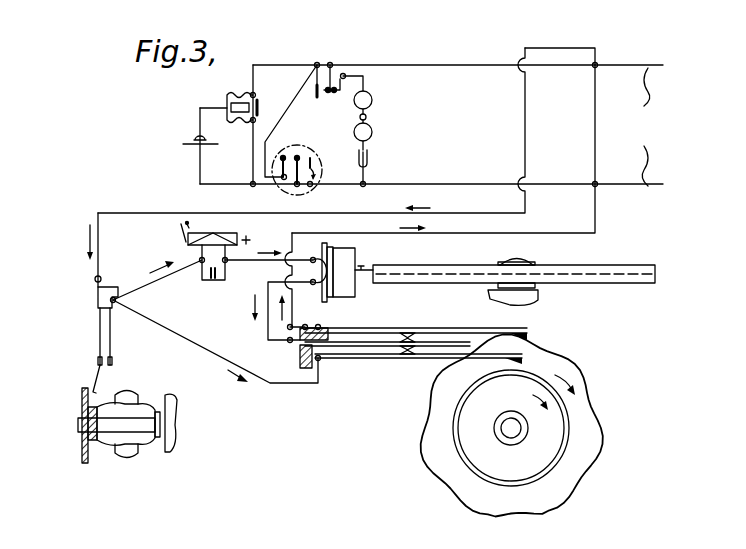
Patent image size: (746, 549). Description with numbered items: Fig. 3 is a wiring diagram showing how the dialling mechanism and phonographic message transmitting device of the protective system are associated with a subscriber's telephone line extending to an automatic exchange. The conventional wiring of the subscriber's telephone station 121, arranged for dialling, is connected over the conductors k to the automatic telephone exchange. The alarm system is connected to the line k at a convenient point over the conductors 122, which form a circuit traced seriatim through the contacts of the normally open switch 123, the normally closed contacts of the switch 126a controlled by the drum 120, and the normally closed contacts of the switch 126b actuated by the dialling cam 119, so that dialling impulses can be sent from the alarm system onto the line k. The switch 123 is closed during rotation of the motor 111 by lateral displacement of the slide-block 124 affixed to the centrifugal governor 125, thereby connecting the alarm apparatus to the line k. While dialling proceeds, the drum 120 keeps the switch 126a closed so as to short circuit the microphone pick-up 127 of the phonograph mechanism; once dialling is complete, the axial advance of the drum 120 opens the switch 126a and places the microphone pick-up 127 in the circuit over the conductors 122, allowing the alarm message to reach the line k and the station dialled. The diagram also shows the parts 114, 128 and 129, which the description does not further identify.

The motor 111 is at (178, 445).
The bar 114 is at (537, 258).
The dialling cam 119 is at (585, 410).
The drum 120 is at (573, 440).
The conventional wiring of subscriber's telephone station 121 is at (297, 157).
The conductors 122 is at (525, 137).
The normally open switch 123 is at (98, 360).
The slide-block 124 is at (80, 453).
The centrifugal governor 125 is at (130, 458).
The switch 126a is at (393, 353).
The switch 126b is at (425, 328).
The microphone pick-up 127 is at (345, 253).
The relay 128 is at (213, 233).
The switch lever 129 is at (179, 229).
The conductors (subscriber's line) k is at (644, 127).